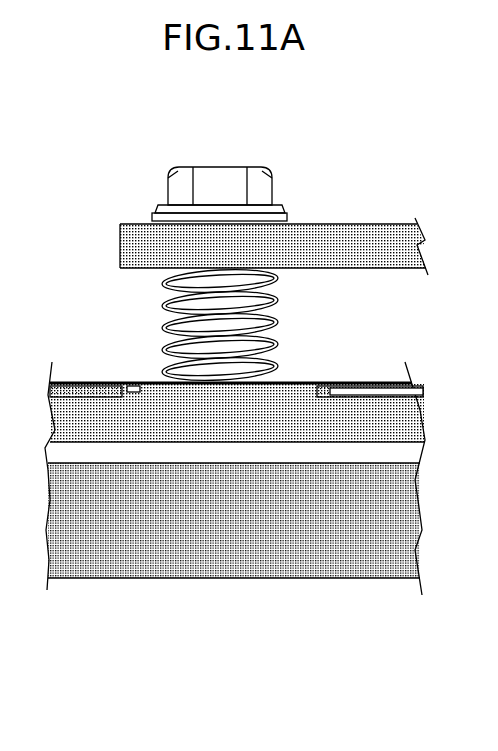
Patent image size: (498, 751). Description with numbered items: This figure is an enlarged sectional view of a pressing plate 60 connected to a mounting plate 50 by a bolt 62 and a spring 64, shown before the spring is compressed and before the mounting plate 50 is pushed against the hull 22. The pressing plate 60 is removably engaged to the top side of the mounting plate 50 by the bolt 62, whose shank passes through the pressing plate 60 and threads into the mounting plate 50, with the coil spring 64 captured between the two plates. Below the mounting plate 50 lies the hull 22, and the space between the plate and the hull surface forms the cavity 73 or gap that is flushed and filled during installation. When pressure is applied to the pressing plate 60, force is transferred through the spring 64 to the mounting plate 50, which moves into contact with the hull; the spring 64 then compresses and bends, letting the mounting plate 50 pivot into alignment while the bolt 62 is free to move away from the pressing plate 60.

The hull 22 is at (268, 541).
The mounting plate 50 is at (118, 420).
The pressing plate 60 is at (132, 243).
The bolt 62 is at (188, 178).
The spring 64 is at (278, 327).
The cavity 73 is at (337, 453).